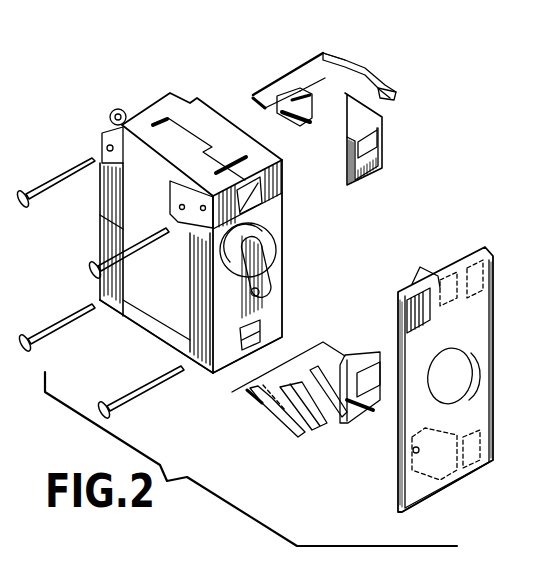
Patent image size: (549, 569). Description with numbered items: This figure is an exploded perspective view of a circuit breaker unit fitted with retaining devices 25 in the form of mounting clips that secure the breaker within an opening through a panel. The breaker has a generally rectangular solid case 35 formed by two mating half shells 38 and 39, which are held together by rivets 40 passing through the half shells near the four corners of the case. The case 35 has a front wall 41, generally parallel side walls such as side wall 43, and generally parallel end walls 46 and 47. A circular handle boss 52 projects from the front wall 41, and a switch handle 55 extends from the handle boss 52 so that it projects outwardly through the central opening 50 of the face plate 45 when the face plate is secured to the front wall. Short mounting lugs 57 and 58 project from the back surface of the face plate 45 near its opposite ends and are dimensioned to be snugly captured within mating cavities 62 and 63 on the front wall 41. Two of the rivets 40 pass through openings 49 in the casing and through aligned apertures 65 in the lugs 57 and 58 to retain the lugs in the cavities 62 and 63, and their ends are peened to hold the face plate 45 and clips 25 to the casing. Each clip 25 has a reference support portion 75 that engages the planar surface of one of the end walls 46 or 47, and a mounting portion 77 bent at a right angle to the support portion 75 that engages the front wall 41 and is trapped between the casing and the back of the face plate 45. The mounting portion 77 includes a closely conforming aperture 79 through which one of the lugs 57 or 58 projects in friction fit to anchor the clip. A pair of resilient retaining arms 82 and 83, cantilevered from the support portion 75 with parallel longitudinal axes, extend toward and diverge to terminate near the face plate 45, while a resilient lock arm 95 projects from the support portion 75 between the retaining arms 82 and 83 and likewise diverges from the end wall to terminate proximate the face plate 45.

The retaining device 25 is at (316, 240).
The case 35 is at (98, 213).
The half shell 38 is at (127, 135).
The half shell 39 is at (161, 100).
The rivet 40 is at (63, 172).
The front wall 41 is at (231, 358).
The side wall 43 is at (137, 313).
The face plate 45 is at (421, 375).
The end wall 46 is at (146, 144).
The end wall 47 is at (157, 346).
The opening 49 is at (107, 147).
The central opening 50 is at (445, 393).
The handle boss 52 is at (273, 266).
The switch handle 55 is at (277, 288).
The mounting lug 57 is at (455, 480).
The mounting lug 58 is at (417, 274).
The cavity 62 is at (262, 190).
The cavity 63 is at (264, 329).
The aperture 65 is at (405, 296).
The reference support portion 75 is at (310, 78).
The mounting portion 77 is at (387, 138).
The aperture 79 is at (388, 162).
The retaining arm 82 is at (380, 76).
The retaining arm 83 is at (318, 117).
The lock arm 95 is at (322, 70).